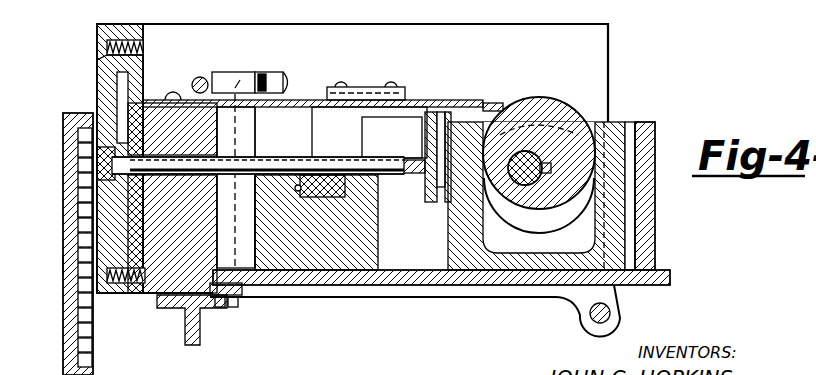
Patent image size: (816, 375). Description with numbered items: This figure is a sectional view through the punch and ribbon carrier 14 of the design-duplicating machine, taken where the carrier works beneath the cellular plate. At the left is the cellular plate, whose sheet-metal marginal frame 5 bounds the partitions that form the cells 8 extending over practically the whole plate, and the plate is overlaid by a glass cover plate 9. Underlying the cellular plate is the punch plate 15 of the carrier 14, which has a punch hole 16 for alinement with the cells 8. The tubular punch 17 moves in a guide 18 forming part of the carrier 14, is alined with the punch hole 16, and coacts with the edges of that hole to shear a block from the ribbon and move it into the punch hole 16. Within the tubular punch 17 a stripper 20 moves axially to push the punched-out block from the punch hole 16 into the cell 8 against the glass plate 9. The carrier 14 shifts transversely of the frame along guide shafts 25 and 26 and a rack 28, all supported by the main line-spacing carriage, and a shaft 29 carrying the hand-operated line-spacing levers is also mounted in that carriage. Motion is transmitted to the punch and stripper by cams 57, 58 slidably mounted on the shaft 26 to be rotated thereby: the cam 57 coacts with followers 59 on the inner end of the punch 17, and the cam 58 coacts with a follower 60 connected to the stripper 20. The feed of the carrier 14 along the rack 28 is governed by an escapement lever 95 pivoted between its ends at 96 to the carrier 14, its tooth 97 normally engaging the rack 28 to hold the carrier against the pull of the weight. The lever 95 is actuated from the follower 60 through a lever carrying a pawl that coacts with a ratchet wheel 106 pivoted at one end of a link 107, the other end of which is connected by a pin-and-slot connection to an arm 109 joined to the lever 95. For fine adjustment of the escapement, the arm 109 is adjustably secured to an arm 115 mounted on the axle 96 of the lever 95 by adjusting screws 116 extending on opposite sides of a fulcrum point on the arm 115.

The marginal frame 5 is at (80, 115).
The cells 8 is at (80, 208).
The cover plate 9 is at (68, 263).
The carrier 14 is at (604, 60).
The punch plate 15 is at (100, 30).
The punch hole 16 is at (100, 165).
The punch 17 is at (328, 158).
The guide 18 is at (203, 130).
The stripper 20 is at (383, 168).
The shaft 25 is at (614, 311).
The shaft 26 is at (524, 160).
The rack 28 is at (201, 320).
The shaft 29 is at (195, 80).
The cam 57 is at (558, 222).
The cam 58 is at (548, 99).
The followers 59 is at (650, 125).
The follower 60 is at (437, 236).
The escapement lever 95 is at (245, 292).
The pivot 96 is at (249, 72).
The tooth 97 is at (233, 306).
The ratchet wheel 106 is at (492, 103).
The link 107 is at (437, 97).
The arm 109 is at (280, 75).
The arm 115 is at (212, 72).
The adjusting screws 116 is at (288, 80).